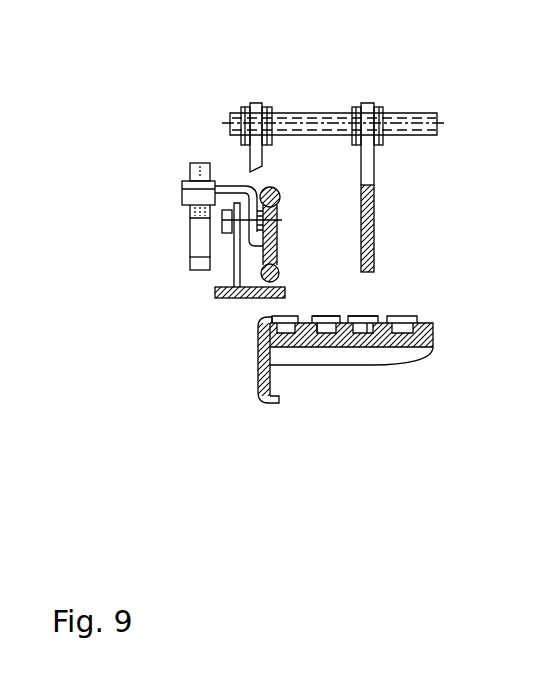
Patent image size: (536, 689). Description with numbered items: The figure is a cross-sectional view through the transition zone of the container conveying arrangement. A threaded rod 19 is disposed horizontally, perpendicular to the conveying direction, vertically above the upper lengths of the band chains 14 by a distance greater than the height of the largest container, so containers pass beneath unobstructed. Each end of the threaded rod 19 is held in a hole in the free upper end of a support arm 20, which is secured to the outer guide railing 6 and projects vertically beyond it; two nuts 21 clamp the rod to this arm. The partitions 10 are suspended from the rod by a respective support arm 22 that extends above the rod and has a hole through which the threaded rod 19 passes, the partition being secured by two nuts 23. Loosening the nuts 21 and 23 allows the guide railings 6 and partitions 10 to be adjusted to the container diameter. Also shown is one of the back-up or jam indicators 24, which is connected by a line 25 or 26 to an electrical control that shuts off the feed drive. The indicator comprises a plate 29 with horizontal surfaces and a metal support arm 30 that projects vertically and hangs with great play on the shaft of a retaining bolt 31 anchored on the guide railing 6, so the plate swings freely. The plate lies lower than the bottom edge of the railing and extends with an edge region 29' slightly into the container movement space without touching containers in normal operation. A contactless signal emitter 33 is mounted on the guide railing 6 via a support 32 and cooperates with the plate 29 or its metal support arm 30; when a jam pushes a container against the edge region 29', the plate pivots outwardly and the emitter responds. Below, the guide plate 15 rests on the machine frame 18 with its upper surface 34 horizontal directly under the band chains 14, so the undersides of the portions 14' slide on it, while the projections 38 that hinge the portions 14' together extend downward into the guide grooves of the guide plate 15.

The guide railing 6 is at (278, 238).
The partition 10 is at (374, 230).
The band chain 14 is at (394, 283).
The portion of band chain 14' is at (390, 299).
The guide plate 15 is at (424, 333).
The machine frame 18 is at (256, 392).
The threaded rod 19 is at (327, 111).
The support arm 20 is at (248, 158).
The nut 21 is at (243, 107).
The support arm 22 is at (368, 180).
The nut 23 is at (355, 107).
The back-up or jam indicator 24 is at (148, 188).
The line 25 is at (196, 162).
The line 26 is at (200, 172).
The plate 29 is at (212, 287).
The edge region 29' is at (268, 295).
The support arm 30 is at (232, 262).
The retaining bolt 31 is at (190, 226).
The support 32 is at (245, 186).
The signal emitter 33 is at (188, 251).
The upper surface 34 is at (307, 317).
The projection 38 is at (328, 335).